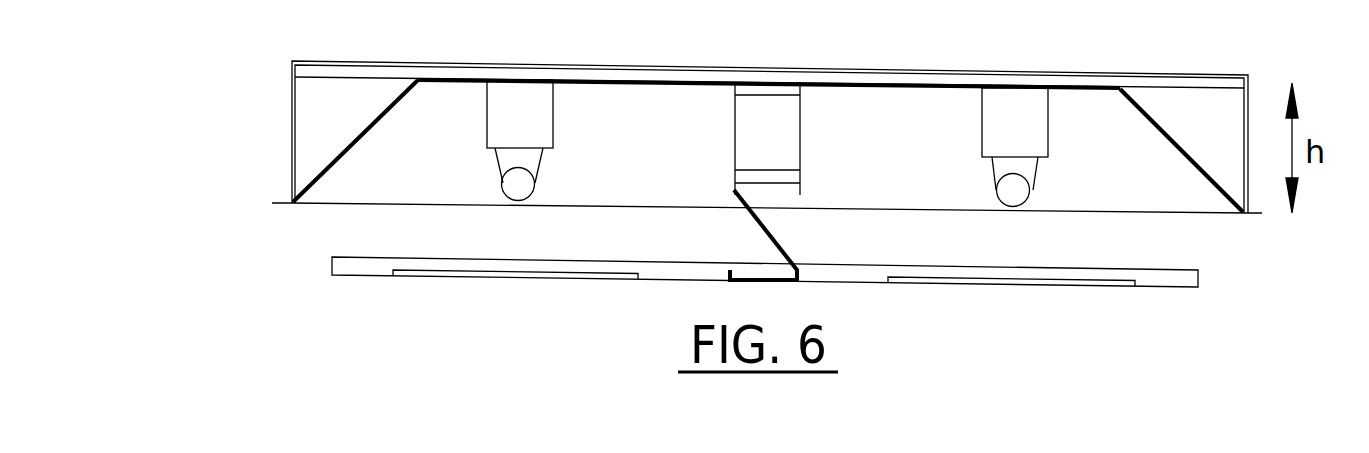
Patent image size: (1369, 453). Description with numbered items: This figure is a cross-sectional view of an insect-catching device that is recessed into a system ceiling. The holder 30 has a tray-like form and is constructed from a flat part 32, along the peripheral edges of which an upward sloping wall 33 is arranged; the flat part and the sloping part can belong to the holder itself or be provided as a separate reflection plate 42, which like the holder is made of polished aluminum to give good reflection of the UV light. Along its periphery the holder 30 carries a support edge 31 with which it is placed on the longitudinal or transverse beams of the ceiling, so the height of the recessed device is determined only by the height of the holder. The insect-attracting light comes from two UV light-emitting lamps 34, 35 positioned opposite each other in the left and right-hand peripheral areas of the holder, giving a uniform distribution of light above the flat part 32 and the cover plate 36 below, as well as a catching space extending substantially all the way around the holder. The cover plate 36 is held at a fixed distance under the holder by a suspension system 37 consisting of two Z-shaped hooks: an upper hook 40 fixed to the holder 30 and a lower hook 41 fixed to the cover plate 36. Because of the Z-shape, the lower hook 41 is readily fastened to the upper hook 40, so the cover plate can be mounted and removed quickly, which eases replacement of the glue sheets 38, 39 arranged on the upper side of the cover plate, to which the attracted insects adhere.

The holder 30 is at (215, 92).
The support edge 31 is at (284, 205).
The flat part 32 is at (843, 83).
The upward sloping wall 33 is at (1163, 140).
The UV light-emitting lamp 34 is at (518, 185).
The UV light-emitting lamp 35 is at (1003, 187).
The cover plate 36 is at (1177, 287).
The suspension system 37 is at (680, 144).
The glue sheet 38 is at (448, 273).
The glue sheet 39 is at (1063, 282).
The upper hook 40 is at (747, 130).
The lower hook 41 is at (757, 225).
The reflection plate 42 is at (420, 81).